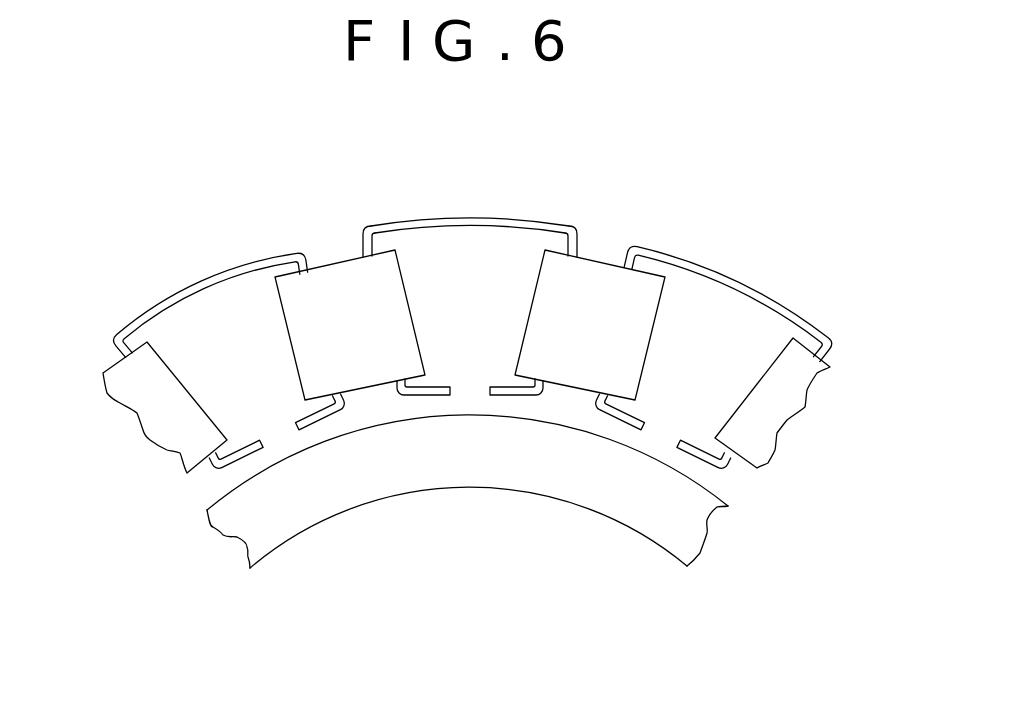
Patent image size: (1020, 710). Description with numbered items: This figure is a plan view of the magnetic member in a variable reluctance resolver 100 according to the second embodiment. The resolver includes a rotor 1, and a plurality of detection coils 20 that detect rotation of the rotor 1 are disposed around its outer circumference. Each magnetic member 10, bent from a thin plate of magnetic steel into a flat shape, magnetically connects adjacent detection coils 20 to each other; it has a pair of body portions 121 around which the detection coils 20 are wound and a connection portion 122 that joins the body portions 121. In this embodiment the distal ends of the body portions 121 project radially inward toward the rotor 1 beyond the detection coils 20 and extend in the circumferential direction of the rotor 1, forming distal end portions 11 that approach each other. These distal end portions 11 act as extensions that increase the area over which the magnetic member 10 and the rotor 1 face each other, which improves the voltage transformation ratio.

The rotor 1 is at (295, 513).
The magnetic member 10 is at (167, 272).
The distal end portion 11 is at (432, 395).
The detection coil 20 is at (330, 280).
The variable reluctance resolver 100 is at (722, 164).
The body portion 121 is at (362, 251).
The connection portion 122 is at (412, 215).